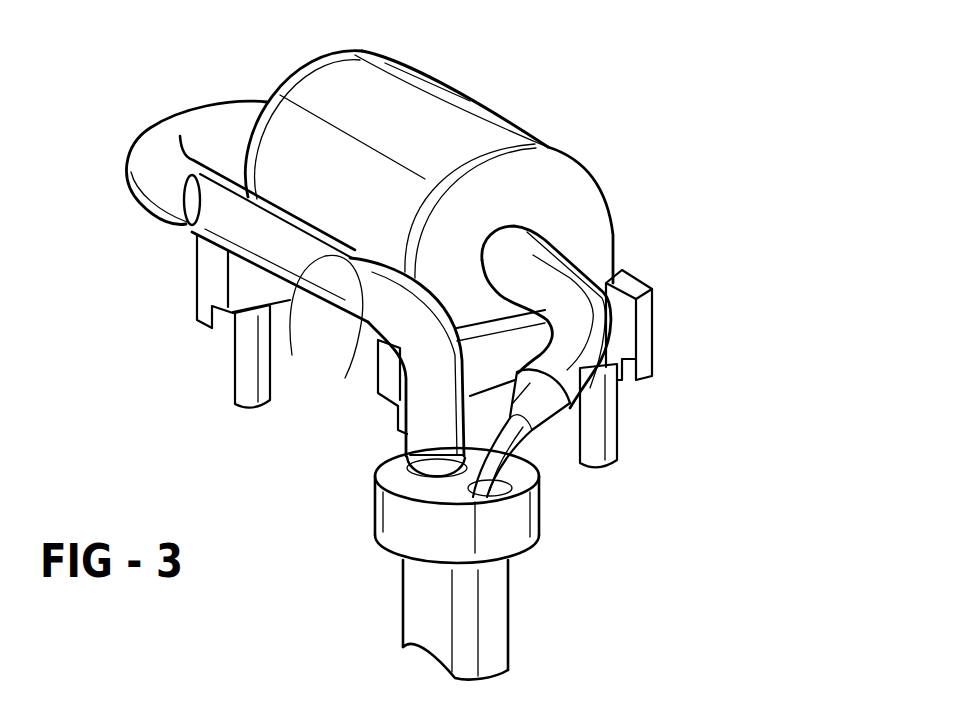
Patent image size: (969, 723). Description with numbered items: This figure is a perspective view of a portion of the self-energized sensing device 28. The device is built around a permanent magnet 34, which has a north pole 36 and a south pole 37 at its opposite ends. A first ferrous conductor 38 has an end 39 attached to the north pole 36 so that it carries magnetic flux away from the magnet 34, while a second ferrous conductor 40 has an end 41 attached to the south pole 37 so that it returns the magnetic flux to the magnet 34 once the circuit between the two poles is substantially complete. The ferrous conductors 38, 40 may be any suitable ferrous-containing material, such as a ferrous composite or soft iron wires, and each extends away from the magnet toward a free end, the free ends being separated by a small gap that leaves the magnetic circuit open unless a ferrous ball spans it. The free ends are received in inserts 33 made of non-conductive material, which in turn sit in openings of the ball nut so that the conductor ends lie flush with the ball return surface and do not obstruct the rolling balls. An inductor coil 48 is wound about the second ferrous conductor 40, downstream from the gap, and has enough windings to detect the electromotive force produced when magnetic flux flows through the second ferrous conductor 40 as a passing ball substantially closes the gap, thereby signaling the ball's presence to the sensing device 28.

The sensing device 28 is at (555, 116).
The inductor coil 48 is at (405, 130).
The second ferrous conductor 40 is at (150, 147).
The south pole 37 is at (186, 196).
The end of second ferrous conductor 41 is at (197, 233).
The end of first ferrous conductor 39 is at (323, 287).
The permanent magnet 34 is at (298, 300).
The north pole 36 is at (352, 366).
The first ferrous conductor 38 is at (420, 417).
The insert 33 is at (500, 533).